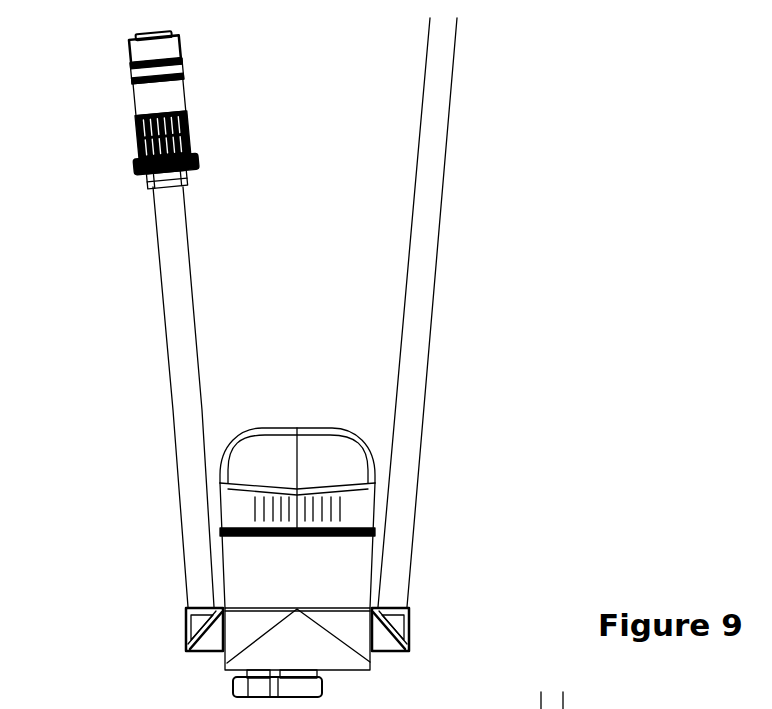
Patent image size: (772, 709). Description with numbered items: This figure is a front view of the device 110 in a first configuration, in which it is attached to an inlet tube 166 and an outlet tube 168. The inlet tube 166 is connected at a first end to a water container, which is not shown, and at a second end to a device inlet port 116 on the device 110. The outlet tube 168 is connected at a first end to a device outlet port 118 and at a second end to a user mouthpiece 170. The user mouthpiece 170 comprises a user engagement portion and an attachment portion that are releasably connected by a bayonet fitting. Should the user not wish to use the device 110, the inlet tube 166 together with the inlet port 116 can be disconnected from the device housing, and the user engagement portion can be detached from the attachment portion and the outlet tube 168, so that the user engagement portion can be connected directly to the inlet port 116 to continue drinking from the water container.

The device 110 is at (296, 398).
The device inlet port 116 is at (410, 628).
The device outlet port 118 is at (186, 632).
The inlet tube 166 is at (418, 395).
The outlet tube 168 is at (187, 382).
The user mouthpiece 170 is at (114, 97).